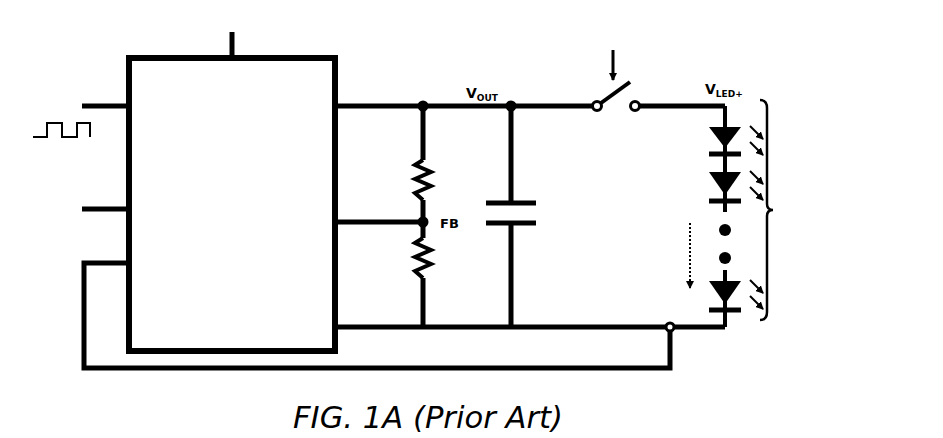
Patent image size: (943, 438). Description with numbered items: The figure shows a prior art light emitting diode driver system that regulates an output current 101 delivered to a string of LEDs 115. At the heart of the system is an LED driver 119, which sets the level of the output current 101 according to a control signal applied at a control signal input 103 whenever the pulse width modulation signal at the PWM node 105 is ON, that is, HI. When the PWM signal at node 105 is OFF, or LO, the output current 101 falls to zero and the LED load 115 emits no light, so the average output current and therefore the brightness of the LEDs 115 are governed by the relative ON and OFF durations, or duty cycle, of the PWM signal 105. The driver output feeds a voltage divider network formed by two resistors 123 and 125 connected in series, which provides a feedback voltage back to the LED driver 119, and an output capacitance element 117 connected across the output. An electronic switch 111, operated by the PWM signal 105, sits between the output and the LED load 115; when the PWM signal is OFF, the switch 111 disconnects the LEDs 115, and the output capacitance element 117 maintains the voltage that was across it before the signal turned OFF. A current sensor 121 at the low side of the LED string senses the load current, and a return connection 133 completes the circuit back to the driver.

The output current 101 is at (680, 238).
The control signal input 103 is at (107, 207).
The PWM node 105 is at (107, 104).
The electronic switch 111 is at (630, 80).
The LEDs 115 is at (761, 213).
The output capacitance element 117 is at (536, 216).
The LED driver 119 is at (258, 57).
The current sensor 121 is at (676, 332).
The resistor 123 is at (423, 163).
The resistor 125 is at (423, 248).
The ground connection 133 is at (107, 262).